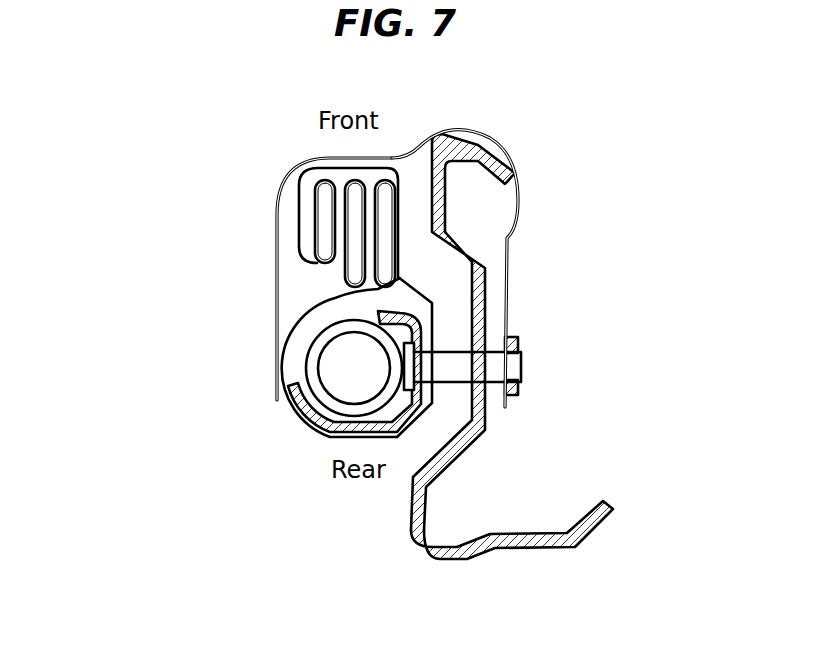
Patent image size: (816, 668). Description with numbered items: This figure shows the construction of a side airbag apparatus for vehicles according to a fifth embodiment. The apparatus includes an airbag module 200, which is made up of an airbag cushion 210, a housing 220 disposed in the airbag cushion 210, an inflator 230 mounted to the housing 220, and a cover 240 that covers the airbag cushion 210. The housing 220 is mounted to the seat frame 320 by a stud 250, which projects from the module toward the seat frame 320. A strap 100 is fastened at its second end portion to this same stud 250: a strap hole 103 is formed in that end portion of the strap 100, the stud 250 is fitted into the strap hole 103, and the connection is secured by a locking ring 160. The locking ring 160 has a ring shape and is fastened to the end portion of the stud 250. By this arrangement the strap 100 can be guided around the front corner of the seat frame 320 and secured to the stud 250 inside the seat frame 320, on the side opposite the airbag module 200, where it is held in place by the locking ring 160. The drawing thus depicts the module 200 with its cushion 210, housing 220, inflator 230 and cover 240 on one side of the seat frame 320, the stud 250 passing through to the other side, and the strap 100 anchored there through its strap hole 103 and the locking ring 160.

The strap 100 is at (518, 168).
The strap hole 103 is at (497, 380).
The locking ring 160 is at (520, 345).
The airbag module 200 is at (258, 188).
The airbag cushion 210 is at (315, 175).
The housing 220 is at (300, 410).
The inflator 230 is at (308, 357).
The cover 240 is at (278, 255).
The stud 250 is at (514, 365).
The seat frame 320 is at (410, 513).